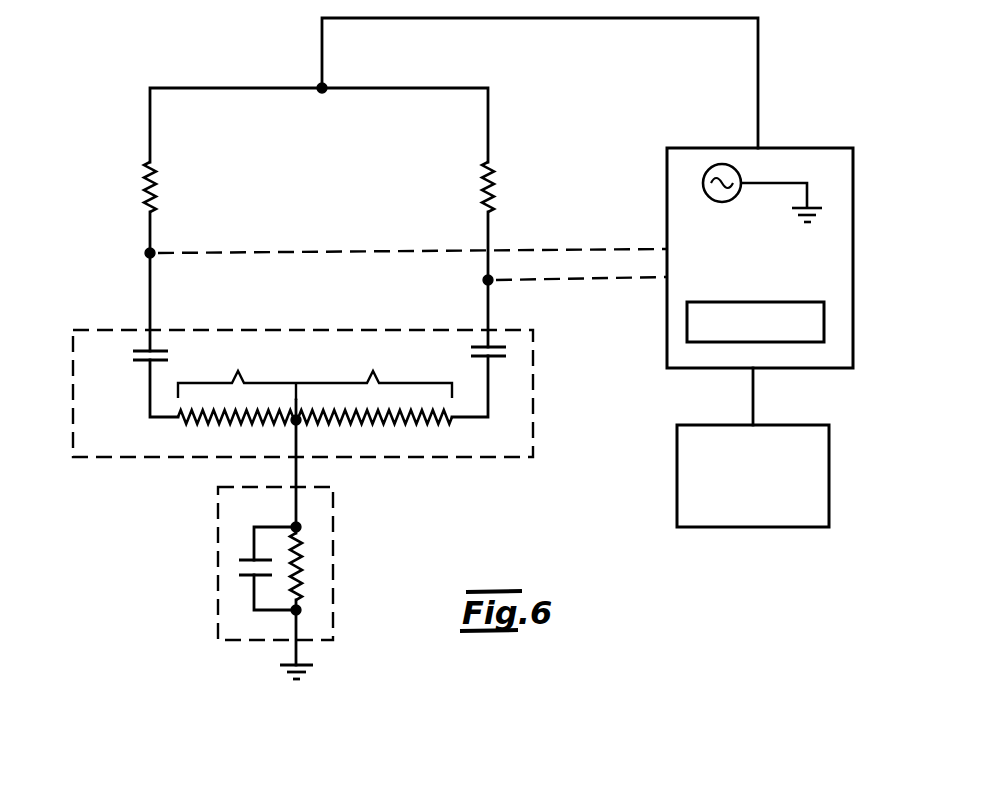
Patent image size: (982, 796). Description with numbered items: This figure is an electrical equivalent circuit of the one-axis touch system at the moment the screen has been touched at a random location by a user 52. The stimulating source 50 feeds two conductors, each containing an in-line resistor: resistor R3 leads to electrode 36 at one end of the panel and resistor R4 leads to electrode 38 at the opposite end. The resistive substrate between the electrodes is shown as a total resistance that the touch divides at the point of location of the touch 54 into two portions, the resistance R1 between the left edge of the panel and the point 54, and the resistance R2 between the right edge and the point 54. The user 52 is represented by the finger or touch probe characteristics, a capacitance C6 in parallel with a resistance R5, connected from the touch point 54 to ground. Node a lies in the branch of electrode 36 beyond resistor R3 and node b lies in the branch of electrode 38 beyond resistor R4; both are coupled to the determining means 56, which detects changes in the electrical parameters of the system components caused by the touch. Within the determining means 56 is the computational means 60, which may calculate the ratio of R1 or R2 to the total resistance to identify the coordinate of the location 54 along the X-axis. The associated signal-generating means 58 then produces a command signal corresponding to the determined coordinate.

The electrode 36 is at (143, 365).
The electrode 38 is at (497, 358).
The stimulating source 50 is at (712, 167).
The user 52 is at (215, 598).
The point of location of the touch 54 is at (301, 424).
The determining means 56 is at (853, 175).
The signal-generating means 58 is at (829, 492).
The computational means 60 is at (824, 318).
The resistance portion R1 is at (237, 372).
The resistance portion R2 is at (374, 373).
The resistor R3 is at (160, 198).
The resistor R4 is at (482, 190).
The user's finger resistance R5 is at (302, 560).
The user's finger capacitance C6 is at (250, 558).
The node a is at (153, 250).
The node b is at (484, 280).